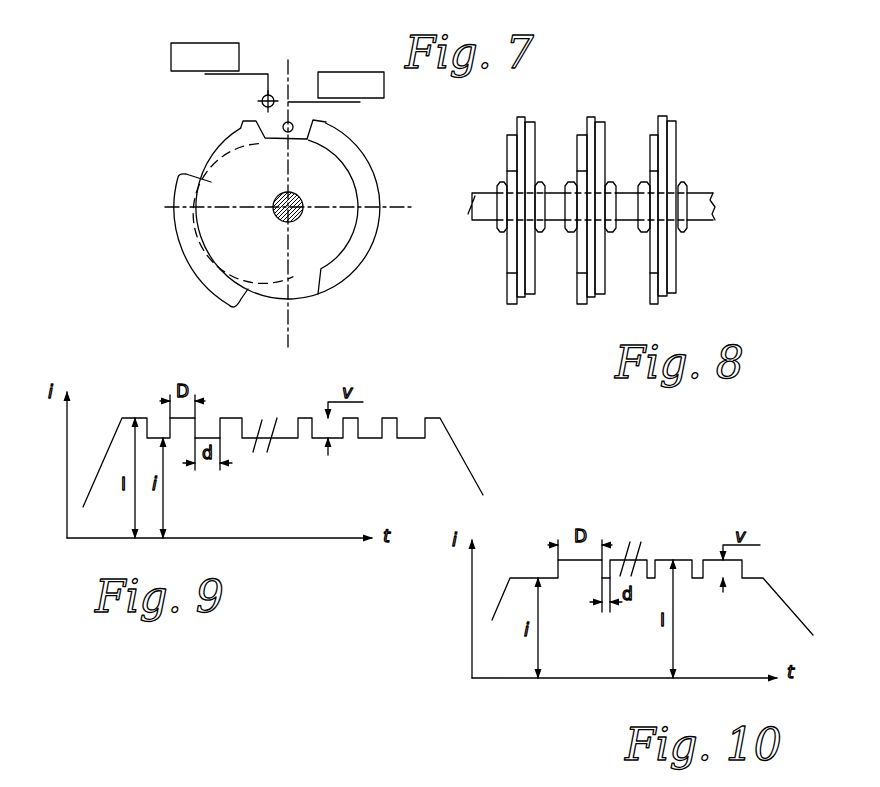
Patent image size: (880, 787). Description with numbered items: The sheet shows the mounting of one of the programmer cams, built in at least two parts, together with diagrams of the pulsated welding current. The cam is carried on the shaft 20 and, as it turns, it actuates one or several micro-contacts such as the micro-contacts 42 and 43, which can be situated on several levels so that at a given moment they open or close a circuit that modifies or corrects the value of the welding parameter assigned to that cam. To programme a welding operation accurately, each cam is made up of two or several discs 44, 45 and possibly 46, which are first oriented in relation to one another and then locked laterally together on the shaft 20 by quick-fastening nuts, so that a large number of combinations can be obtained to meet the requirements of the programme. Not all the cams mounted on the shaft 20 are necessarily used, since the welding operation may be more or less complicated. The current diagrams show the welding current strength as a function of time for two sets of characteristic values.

In FIG. 7, the shaft 20 is at (297, 196).
In FIG. 8, the shaft 20 is at (487, 194).
In FIG. 7, the micro-contact 42 is at (230, 60).
In FIG. 7, the micro-contact 43 is at (362, 80).
In FIG. 7, the disc 44 is at (358, 149).
In FIG. 8, the disc 44 is at (589, 120).
In FIG. 7, the disc 45 is at (231, 141).
In FIG. 8, the disc 45 is at (604, 130).
In FIG. 7, the disc 46 is at (196, 281).
In FIG. 8, the disc 46 is at (578, 147).